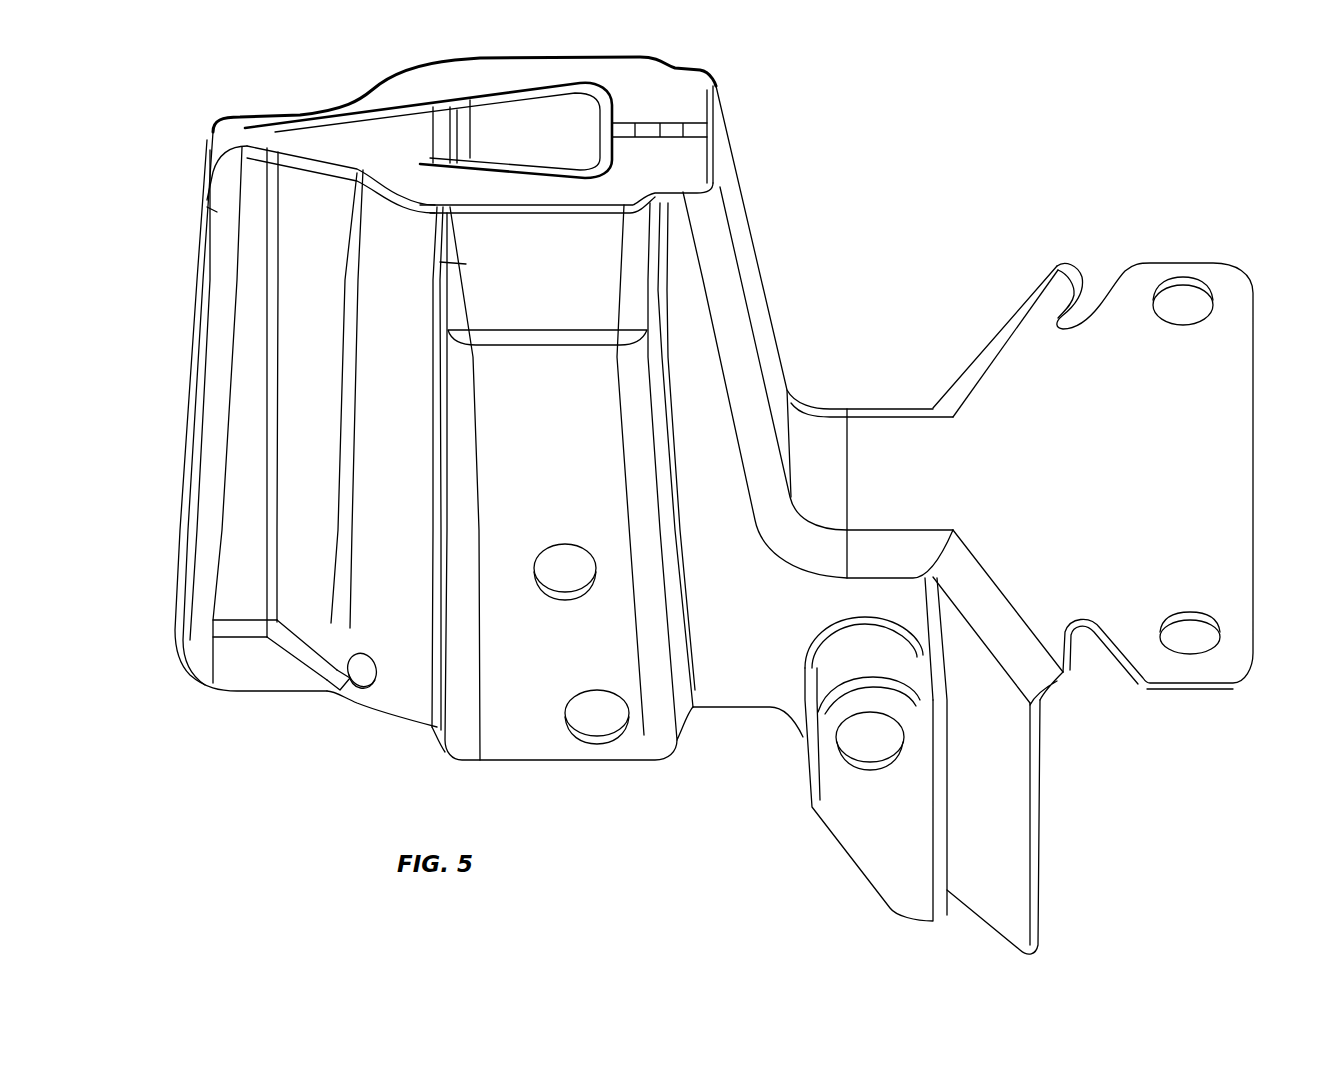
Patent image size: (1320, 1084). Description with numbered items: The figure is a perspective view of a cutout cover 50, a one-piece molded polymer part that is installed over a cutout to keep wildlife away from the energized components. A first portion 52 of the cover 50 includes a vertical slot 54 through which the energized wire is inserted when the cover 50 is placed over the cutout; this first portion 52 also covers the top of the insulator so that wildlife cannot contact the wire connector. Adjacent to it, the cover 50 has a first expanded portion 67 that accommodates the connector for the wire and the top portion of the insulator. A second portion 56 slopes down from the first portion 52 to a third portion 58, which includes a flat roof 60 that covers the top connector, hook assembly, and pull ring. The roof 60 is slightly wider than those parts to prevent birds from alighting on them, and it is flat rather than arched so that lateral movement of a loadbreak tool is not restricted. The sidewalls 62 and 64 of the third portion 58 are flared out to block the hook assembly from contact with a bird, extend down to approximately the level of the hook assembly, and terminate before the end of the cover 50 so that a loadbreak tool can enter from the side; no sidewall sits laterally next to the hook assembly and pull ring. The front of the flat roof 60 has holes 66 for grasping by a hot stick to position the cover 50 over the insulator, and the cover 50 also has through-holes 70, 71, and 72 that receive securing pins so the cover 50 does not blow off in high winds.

The cutout cover 50 is at (1087, 133).
The first portion 52 is at (688, 52).
The vertical slot 54 is at (207, 166).
The second portion 56 is at (751, 222).
The third portion 58 is at (1070, 253).
The flat roof 60 is at (1184, 263).
The sidewall 62 is at (1038, 852).
The sidewall 64 is at (979, 352).
The holes 66 is at (1190, 642).
The first expanded portion 67 is at (498, 752).
The through-hole 70 is at (596, 722).
The through-hole 71 is at (568, 580).
The through-hole 72 is at (860, 740).